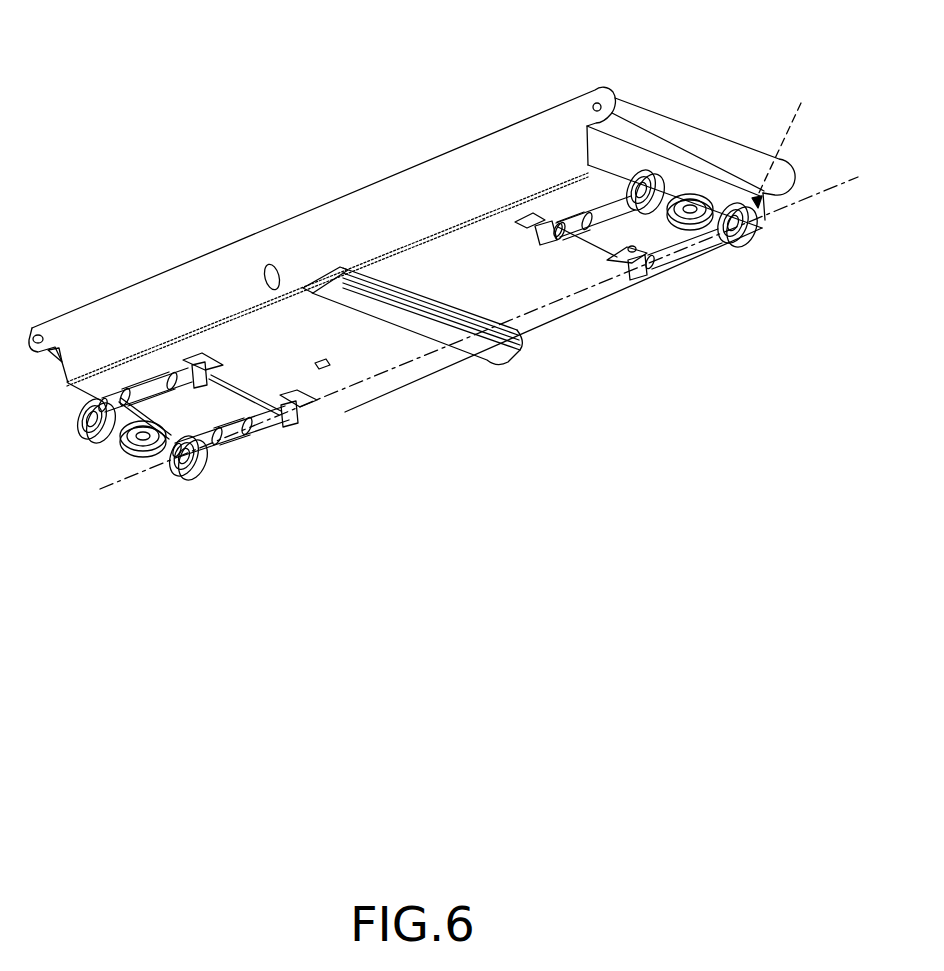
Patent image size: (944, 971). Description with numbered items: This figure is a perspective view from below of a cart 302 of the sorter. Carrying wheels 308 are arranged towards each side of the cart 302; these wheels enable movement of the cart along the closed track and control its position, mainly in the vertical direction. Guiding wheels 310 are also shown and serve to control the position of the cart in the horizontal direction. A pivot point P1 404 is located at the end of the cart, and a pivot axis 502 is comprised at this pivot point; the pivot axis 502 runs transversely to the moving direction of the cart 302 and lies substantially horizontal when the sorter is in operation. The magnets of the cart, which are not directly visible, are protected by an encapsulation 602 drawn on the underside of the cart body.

The cart 302 is at (133, 178).
The carrying wheels 308 is at (638, 173).
The guiding wheels 310 is at (677, 227).
The pivot point P1 404 is at (795, 135).
The pivot axis 502 is at (790, 202).
The encapsulation 602 is at (503, 363).